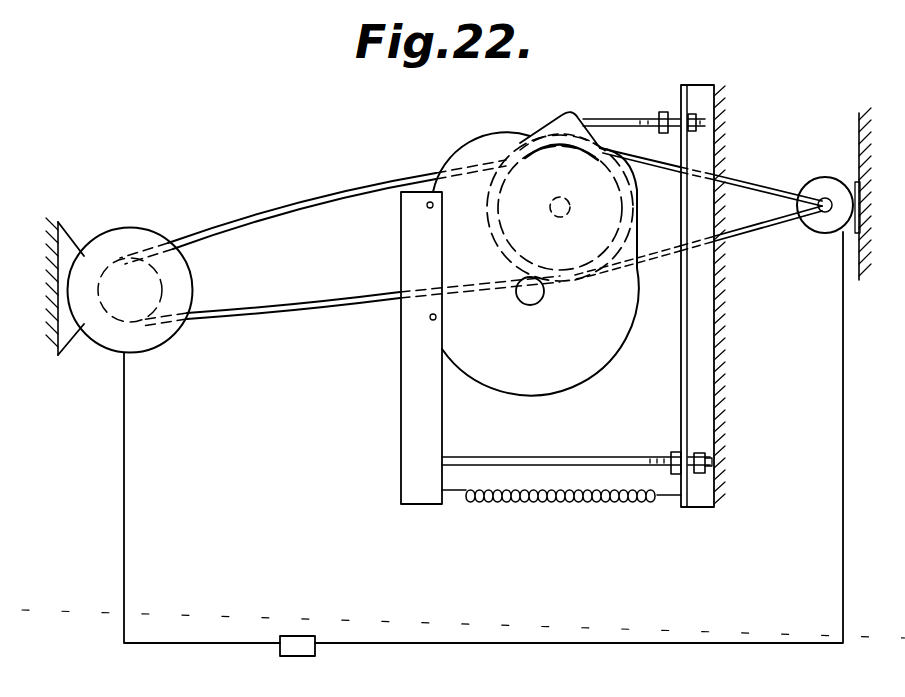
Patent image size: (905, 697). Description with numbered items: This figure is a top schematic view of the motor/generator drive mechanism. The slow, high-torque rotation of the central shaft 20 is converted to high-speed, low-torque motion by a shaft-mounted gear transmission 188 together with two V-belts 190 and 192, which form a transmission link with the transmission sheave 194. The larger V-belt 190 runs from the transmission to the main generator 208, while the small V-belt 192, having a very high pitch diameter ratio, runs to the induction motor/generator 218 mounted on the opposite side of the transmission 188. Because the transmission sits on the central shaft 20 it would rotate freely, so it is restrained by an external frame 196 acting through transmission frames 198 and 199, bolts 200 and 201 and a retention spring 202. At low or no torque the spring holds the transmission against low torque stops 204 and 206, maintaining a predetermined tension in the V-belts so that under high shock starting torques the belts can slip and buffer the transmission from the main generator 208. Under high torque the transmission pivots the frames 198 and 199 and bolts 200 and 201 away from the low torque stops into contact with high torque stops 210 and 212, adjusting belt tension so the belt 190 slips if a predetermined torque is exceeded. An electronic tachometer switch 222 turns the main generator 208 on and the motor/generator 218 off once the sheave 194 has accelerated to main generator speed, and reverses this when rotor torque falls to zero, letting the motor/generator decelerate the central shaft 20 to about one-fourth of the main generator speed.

The central shaft 20 is at (543, 300).
The shaft-mounted gear transmission 188 is at (557, 373).
The V-belt 190 is at (322, 186).
The small V-belt 192 is at (763, 181).
The transmission sheave 194 is at (507, 152).
The external frame 196 is at (715, 378).
The transmission frame 198 is at (427, 428).
The transmission frame 199 is at (562, 120).
The bolt 200 is at (525, 458).
The bolt 201 is at (638, 86).
The retention spring 202 is at (537, 513).
The low torque stop 204 is at (678, 454).
The low torque stop 206 is at (694, 112).
The main generator 208 is at (195, 285).
The high torque stop 210 is at (700, 472).
The high torque stop 212 is at (663, 110).
The induction motor/generator 218 is at (822, 228).
The electronic tachometer switch 222 is at (300, 636).